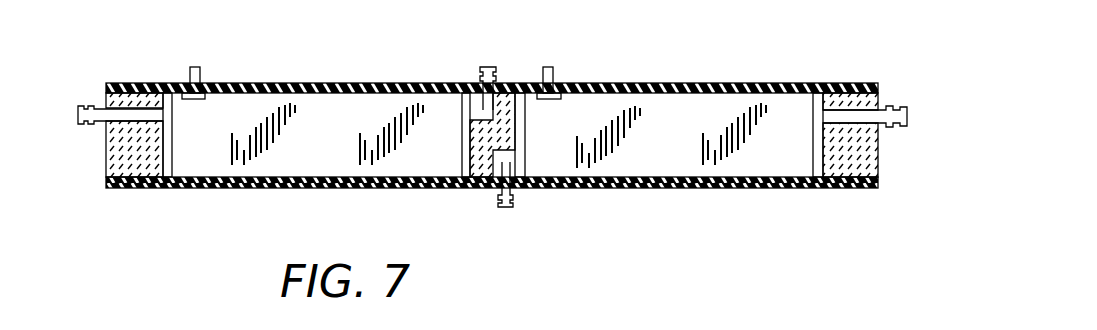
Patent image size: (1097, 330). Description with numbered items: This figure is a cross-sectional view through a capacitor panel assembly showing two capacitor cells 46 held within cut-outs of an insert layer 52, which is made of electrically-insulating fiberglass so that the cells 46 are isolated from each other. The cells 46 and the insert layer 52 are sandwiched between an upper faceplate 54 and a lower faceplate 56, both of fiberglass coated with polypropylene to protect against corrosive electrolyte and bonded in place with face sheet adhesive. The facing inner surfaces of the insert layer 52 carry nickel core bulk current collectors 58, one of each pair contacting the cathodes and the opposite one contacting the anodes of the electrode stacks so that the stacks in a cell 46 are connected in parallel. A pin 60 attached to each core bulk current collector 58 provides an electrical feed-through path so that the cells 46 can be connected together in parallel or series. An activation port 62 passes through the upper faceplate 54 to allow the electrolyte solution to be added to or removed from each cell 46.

The capacitor cell 46 is at (337, 126).
The insert layer 52 is at (867, 225).
The upper faceplate 54 is at (723, 84).
The lower faceplate 56 is at (757, 188).
The core bulk current collector 58 is at (172, 146).
The pin 60 is at (80, 107).
The activation port 62 is at (192, 67).